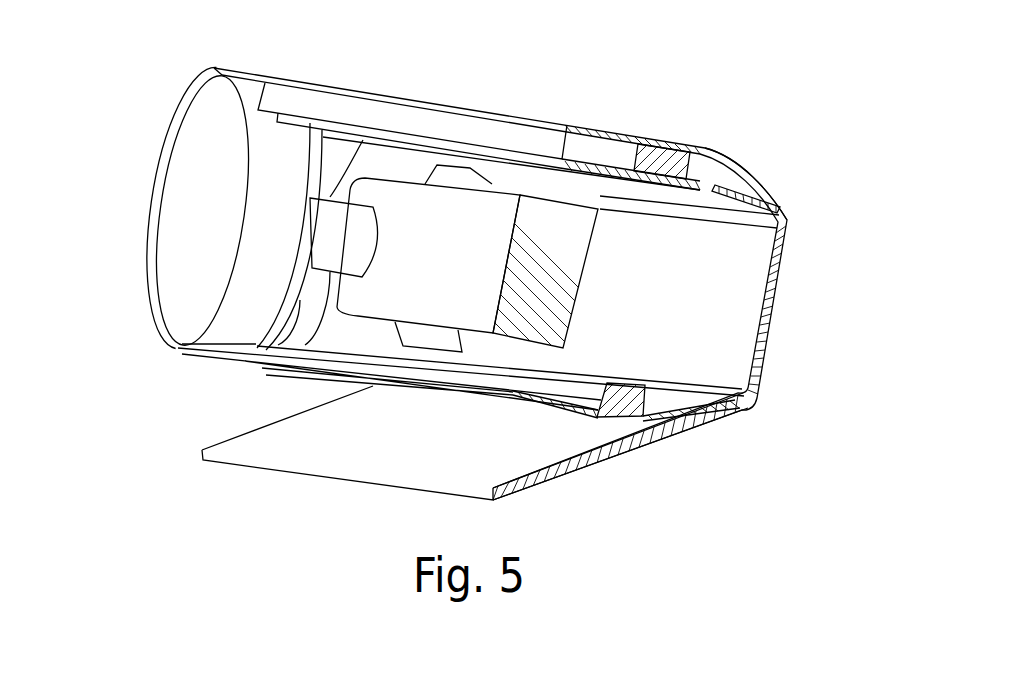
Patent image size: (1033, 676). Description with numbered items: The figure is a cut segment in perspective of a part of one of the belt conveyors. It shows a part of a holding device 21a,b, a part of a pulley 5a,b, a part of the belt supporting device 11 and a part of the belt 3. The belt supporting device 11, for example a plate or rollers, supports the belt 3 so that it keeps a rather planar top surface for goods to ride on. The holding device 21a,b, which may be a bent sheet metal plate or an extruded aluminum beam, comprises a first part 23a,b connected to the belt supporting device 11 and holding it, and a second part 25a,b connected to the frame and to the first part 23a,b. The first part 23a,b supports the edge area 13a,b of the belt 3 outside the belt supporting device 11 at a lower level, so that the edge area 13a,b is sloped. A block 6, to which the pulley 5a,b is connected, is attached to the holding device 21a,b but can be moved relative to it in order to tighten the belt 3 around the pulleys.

The belt 3 is at (602, 123).
The pulley 5a,b is at (173, 262).
The block 6 is at (452, 271).
The belt supporting device 11 is at (446, 112).
The edge area 13a,b is at (728, 162).
The holding device 21a,b is at (820, 312).
The first part 23a,b is at (740, 190).
The second part 25a,b is at (637, 448).